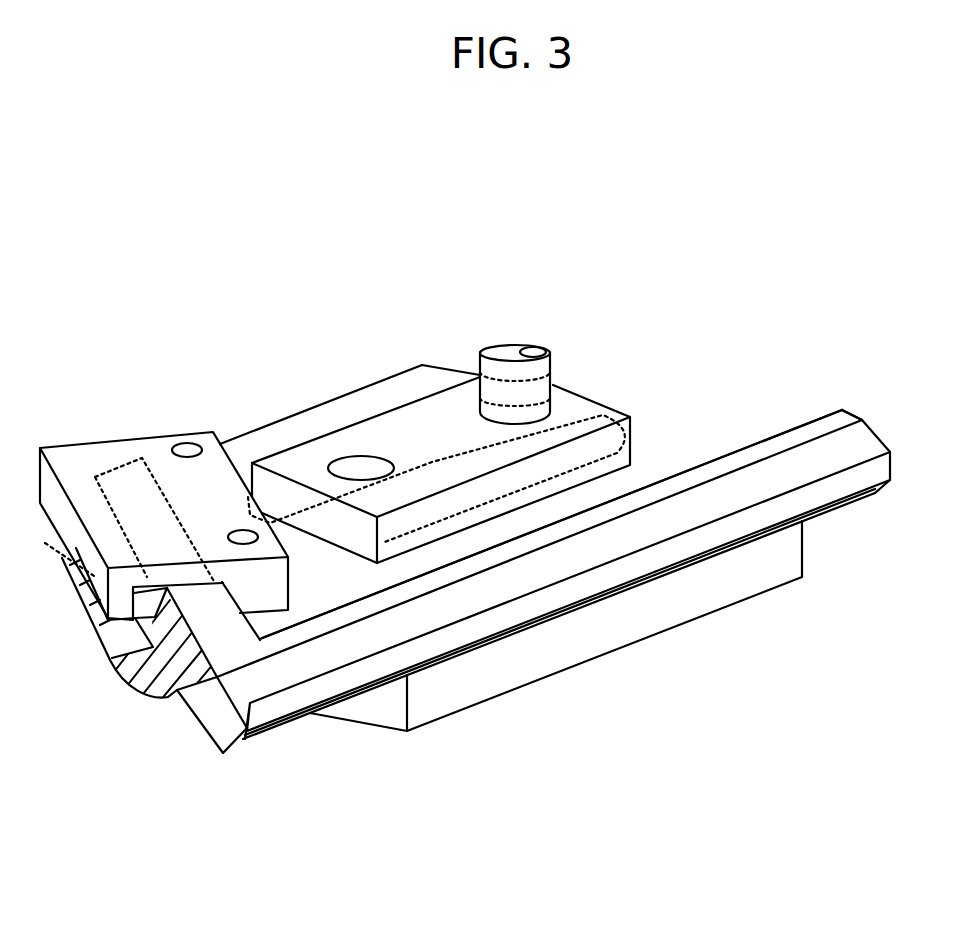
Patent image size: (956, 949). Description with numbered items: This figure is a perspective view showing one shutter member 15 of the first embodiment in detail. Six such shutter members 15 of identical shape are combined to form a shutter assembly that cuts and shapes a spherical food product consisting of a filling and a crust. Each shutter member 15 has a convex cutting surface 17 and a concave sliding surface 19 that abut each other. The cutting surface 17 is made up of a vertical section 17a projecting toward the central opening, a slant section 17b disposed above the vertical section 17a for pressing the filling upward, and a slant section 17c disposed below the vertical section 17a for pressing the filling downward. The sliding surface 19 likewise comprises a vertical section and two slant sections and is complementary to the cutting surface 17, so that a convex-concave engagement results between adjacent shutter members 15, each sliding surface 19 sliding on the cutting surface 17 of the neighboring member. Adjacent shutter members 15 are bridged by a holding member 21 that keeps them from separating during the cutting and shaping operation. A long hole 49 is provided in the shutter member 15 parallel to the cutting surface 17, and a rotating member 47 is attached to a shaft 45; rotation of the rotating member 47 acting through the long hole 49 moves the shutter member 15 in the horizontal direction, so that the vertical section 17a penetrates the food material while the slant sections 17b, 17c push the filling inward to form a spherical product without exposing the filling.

The shutter member 15 is at (705, 386).
The cutting surface 17 is at (307, 695).
The vertical section 17a is at (657, 557).
The slant section 17b is at (750, 480).
The slant section 17c is at (580, 610).
The sliding surface 19 is at (217, 717).
The holding member 21 is at (93, 457).
The shaft 45 is at (553, 365).
The rotating member 47 is at (402, 420).
The long hole 49 is at (430, 463).